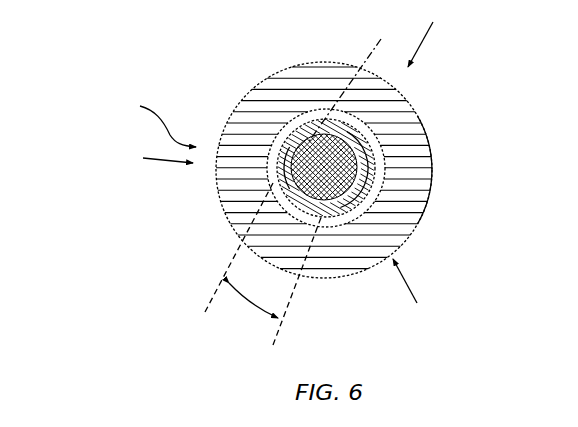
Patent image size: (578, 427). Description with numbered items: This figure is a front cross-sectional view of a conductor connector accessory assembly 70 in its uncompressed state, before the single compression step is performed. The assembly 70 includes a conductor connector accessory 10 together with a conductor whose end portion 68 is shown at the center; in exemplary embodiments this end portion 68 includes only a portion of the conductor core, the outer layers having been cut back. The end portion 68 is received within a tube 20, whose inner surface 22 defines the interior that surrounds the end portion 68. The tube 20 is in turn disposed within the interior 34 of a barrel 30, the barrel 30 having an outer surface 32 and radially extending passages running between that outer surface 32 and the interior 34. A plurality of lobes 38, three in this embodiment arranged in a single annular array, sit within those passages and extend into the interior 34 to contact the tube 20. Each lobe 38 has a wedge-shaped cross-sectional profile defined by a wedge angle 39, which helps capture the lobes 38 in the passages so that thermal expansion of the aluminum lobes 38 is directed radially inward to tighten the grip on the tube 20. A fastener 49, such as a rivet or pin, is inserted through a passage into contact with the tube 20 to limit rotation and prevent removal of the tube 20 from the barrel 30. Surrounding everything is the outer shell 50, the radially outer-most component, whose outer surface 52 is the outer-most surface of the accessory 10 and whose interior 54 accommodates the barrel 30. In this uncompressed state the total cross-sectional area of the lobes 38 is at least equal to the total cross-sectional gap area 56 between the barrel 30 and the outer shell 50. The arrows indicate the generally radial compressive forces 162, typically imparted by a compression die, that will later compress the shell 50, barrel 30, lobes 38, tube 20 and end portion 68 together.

The conductor connector accessory 10 is at (230, 238).
The tube 20 is at (290, 148).
The inner surface 22 is at (353, 140).
The barrel 30 is at (395, 200).
The outer surface 32 is at (350, 137).
The interior 34 is at (370, 173).
The lobe 38 is at (348, 200).
The wedge angle 39 is at (241, 309).
The fastener 49 is at (352, 80).
The outer shell 50 is at (426, 125).
The outer surface 52 is at (438, 140).
The interior 54 is at (393, 194).
The total cross-sectional gap area 56 is at (293, 115).
The end portion 68 is at (297, 175).
The conductor connector accessory assembly 70 is at (157, 121).
The compressive forces 162 is at (163, 160).